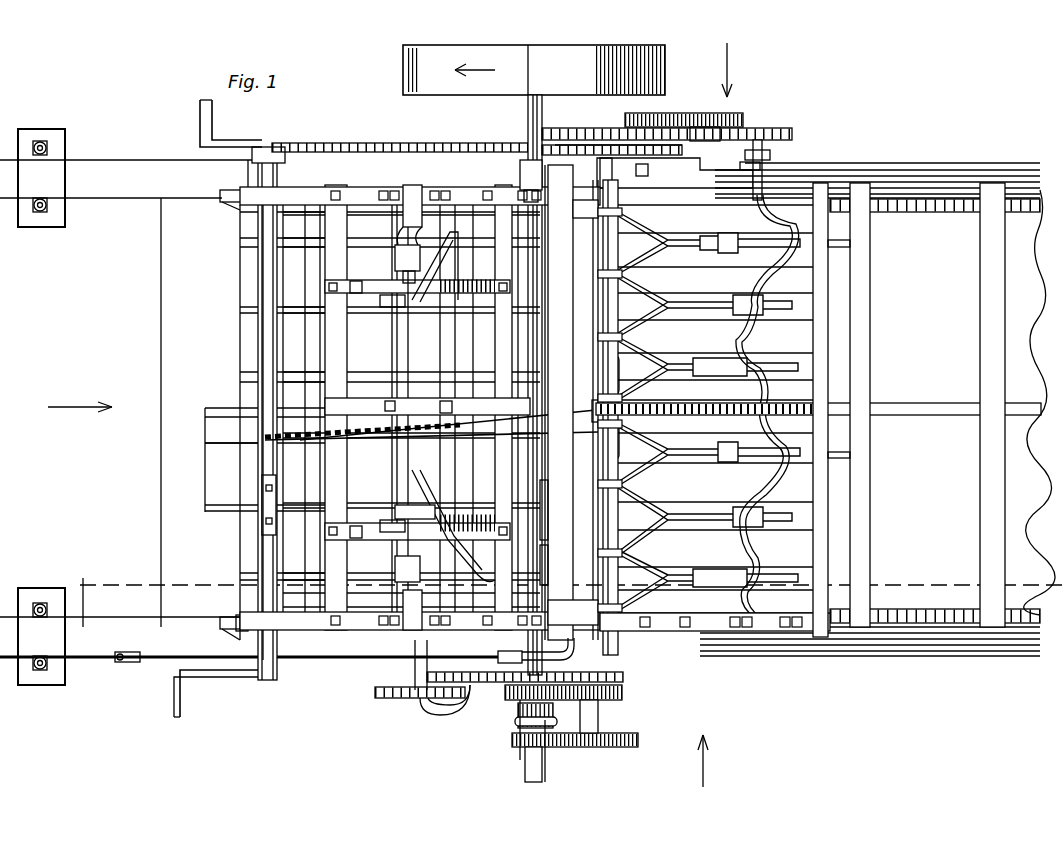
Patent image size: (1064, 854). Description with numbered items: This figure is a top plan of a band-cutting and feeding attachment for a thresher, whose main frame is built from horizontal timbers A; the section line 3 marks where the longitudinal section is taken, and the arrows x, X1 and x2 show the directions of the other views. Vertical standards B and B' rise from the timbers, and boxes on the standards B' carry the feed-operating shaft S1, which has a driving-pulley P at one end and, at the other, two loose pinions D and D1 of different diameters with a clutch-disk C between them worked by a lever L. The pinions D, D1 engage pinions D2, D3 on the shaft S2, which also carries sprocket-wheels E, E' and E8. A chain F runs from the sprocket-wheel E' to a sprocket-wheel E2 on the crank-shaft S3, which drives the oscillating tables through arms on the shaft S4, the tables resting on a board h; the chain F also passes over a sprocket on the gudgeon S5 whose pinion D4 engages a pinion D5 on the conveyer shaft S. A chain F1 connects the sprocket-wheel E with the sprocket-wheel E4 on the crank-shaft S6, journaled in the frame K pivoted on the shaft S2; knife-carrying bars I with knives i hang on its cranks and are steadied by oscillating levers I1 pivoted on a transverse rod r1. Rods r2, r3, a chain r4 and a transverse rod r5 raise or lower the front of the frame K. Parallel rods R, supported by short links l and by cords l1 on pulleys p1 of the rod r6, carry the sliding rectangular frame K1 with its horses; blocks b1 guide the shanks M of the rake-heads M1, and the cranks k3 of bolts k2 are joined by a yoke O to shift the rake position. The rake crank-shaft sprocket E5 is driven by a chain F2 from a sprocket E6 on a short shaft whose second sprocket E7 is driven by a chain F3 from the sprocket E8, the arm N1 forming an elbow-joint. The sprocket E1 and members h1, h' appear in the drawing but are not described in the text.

The horizontal timber A is at (131, 167).
The section line 3 is at (531, 600).
The board h is at (243, 419).
The frame cross member h1 is at (244, 228).
The frame member h' is at (231, 363).
The sprocket-wheel E1 is at (288, 660).
The transverse rod r5 is at (263, 330).
The sprocket-wheel E2 is at (280, 147).
The transverse rod r6 is at (258, 665).
The parallel rod R is at (226, 192).
The cord or chain l1 is at (226, 204).
The pulley p1 is at (244, 628).
The chain F is at (402, 143).
The driving-pulley P is at (570, 55).
The transverse shaft S1 is at (528, 112).
The pinion D4 is at (650, 112).
The sprocket-wheel E4 is at (770, 134).
The sprocket-wheel E is at (612, 131).
The sprocket-wheel E' is at (618, 126).
The shaft S2 is at (604, 158).
The short shaft or gudgeon S5 is at (720, 114).
The arrow X1 is at (738, 70).
The pinion D5 is at (720, 127).
The chain F1 is at (762, 140).
The transverse shaft S is at (790, 120).
The crank-shaft S6 is at (770, 165).
The rectangular frame K1 is at (336, 635).
The rake-shank M is at (340, 292).
The rake-head M1 is at (443, 406).
The transverse yoke O is at (430, 398).
The crank k3 is at (392, 280).
The screw-threaded bolt k2 is at (440, 520).
The block b1 is at (384, 518).
The chain r4 is at (392, 355).
The rod r3 is at (556, 406).
The short link l is at (520, 192).
The vertical standard B is at (571, 402).
The vertical standard B' is at (573, 612).
The crank-shaft S3 is at (560, 520).
The shaft S4 is at (556, 552).
The knife-carrying bar I is at (736, 236).
The oscillating lever I1 is at (672, 330).
The transverse rod r1 is at (690, 336).
The knife i is at (800, 380).
The rod r2 is at (800, 400).
The frame K is at (820, 205).
The sprocket-wheel E8 is at (623, 677).
The sprocket-wheel E5 is at (398, 700).
The pinion D2 is at (622, 694).
The pinion D3 is at (638, 741).
The pinion D is at (518, 712).
The clutch-disk C is at (516, 724).
The pinion D1 is at (526, 760).
The lever L is at (522, 740).
The chain F3 is at (546, 760).
The sprocket-wheel E6 is at (452, 700).
The chain F2 is at (432, 700).
The sprocket-wheel E7 is at (436, 740).
The arm N1 is at (458, 652).
The arrow x is at (709, 761).
The arrow x2 is at (80, 396).